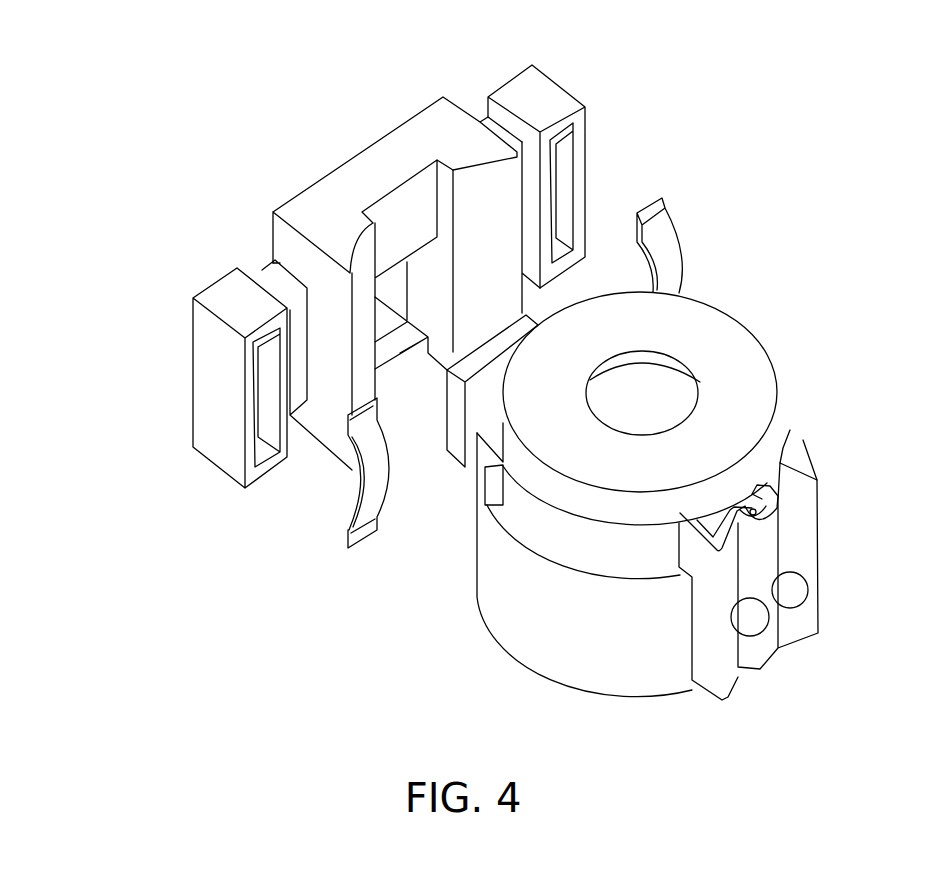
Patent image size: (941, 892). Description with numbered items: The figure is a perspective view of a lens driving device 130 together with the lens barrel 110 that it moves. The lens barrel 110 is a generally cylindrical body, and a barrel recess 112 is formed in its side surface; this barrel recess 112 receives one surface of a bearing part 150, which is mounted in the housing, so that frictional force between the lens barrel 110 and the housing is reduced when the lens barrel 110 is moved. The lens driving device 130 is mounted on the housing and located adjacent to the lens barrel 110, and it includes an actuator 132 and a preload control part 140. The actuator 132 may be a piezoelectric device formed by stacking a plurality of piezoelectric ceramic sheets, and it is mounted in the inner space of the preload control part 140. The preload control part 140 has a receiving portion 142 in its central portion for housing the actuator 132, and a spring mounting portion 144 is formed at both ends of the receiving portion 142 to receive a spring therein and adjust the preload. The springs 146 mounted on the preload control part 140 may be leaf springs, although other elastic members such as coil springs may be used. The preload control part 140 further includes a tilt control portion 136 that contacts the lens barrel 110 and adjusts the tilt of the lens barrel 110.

The lens barrel 110 is at (766, 352).
The barrel recess 112 is at (800, 530).
The lens driving device 130 is at (170, 164).
The actuator 132 is at (527, 316).
The tilt control portion 136 is at (476, 190).
The preload control part 140 is at (187, 402).
The receiving portion 142 is at (393, 294).
The spring mounting portion 144 is at (563, 154).
The spring 146 is at (666, 256).
The bearing part 150 is at (793, 583).